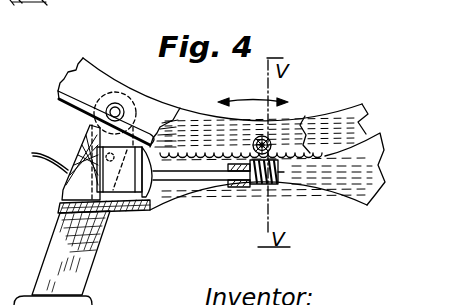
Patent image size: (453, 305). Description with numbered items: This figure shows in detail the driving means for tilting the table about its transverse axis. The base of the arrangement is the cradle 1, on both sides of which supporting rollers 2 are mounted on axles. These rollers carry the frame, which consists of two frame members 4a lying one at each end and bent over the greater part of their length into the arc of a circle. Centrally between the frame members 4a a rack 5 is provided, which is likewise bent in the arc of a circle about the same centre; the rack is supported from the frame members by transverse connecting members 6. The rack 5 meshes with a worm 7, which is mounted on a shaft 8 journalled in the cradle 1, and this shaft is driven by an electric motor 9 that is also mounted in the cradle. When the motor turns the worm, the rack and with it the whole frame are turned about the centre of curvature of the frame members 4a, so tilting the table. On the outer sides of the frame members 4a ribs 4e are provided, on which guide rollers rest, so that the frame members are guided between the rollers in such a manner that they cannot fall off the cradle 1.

The cradle 1 is at (58, 243).
The supporting roller 2 is at (107, 143).
The frame member 4a is at (80, 68).
The rib 4e is at (58, 91).
The rack 5 is at (183, 150).
The transverse connecting member 6 is at (268, 139).
The worm 7 is at (256, 178).
The shaft 8 is at (213, 172).
The electric motor 9 is at (130, 187).